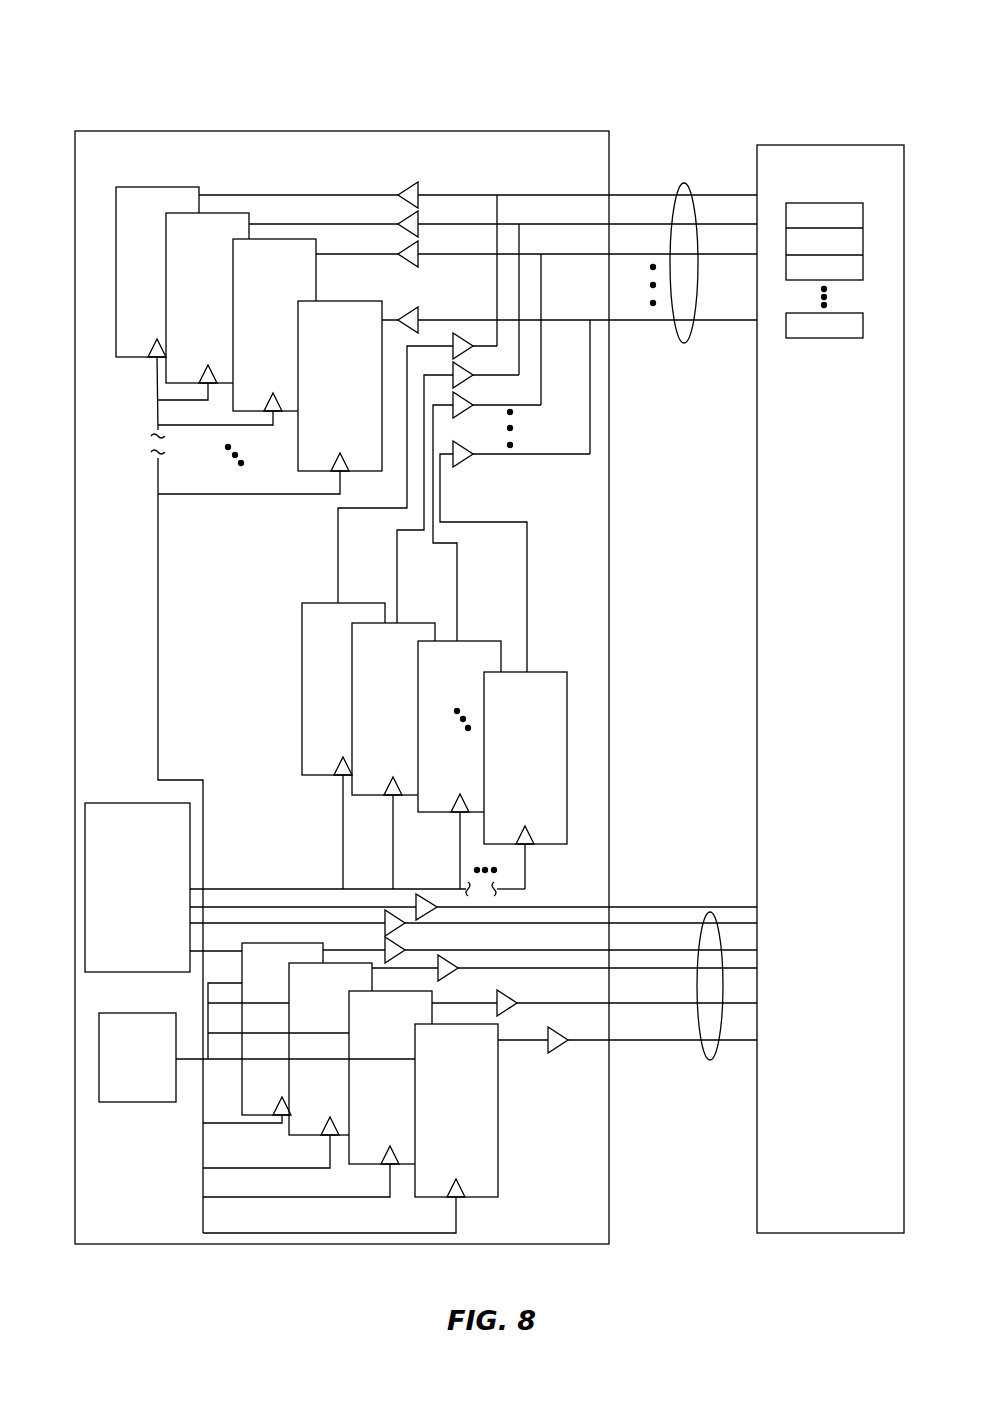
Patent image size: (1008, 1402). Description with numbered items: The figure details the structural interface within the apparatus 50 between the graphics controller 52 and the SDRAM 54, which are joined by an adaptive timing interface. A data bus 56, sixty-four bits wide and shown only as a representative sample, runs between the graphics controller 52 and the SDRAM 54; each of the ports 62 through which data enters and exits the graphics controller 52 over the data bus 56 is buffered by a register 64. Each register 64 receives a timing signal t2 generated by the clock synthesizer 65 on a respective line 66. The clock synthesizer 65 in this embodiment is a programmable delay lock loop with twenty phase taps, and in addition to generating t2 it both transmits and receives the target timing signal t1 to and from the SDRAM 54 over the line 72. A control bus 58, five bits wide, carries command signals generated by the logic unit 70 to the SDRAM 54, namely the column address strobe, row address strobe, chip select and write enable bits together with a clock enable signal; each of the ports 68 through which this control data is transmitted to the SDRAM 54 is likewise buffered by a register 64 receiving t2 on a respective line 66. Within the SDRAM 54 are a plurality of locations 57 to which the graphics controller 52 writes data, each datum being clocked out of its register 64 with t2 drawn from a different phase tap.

The apparatus 50 is at (120, 52).
The graphics controller 52 is at (611, 552).
The SDRAM 54 is at (830, 670).
The data bus 56 is at (687, 291).
The locations 57 is at (838, 255).
The control bus 58 is at (676, 966).
The ports 62 is at (620, 320).
The register 64 is at (176, 212).
The clock synthesizer 65 is at (150, 940).
The line 66 is at (310, 795).
The ports 68 is at (610, 950).
The logic unit 70 is at (150, 1093).
The line 72 is at (473, 873).